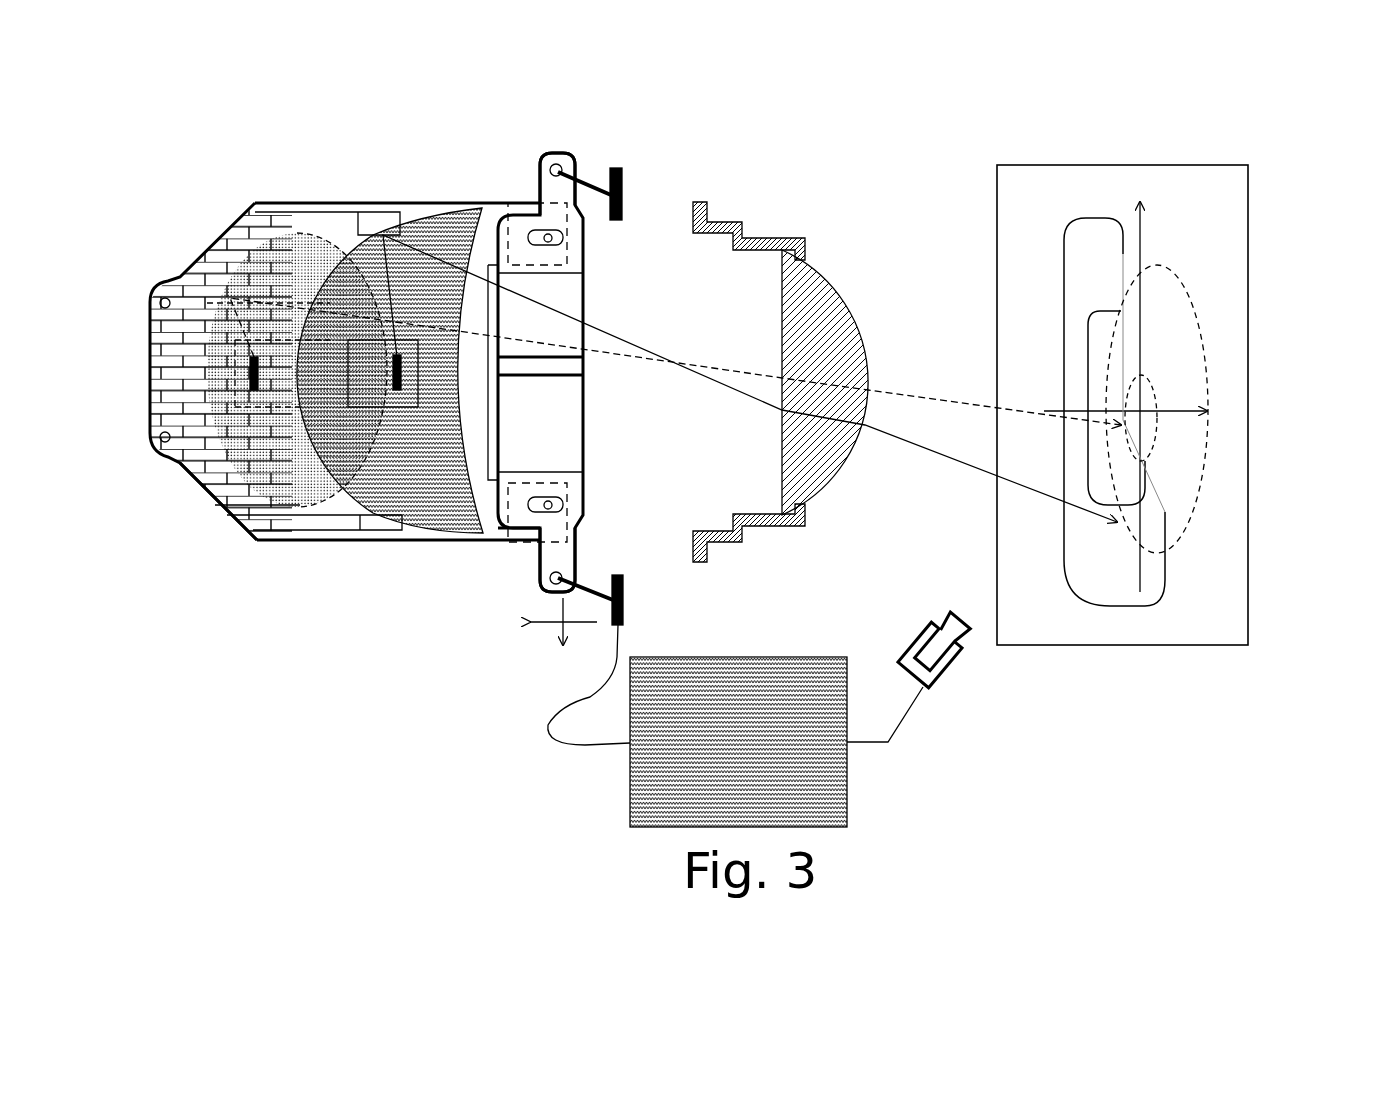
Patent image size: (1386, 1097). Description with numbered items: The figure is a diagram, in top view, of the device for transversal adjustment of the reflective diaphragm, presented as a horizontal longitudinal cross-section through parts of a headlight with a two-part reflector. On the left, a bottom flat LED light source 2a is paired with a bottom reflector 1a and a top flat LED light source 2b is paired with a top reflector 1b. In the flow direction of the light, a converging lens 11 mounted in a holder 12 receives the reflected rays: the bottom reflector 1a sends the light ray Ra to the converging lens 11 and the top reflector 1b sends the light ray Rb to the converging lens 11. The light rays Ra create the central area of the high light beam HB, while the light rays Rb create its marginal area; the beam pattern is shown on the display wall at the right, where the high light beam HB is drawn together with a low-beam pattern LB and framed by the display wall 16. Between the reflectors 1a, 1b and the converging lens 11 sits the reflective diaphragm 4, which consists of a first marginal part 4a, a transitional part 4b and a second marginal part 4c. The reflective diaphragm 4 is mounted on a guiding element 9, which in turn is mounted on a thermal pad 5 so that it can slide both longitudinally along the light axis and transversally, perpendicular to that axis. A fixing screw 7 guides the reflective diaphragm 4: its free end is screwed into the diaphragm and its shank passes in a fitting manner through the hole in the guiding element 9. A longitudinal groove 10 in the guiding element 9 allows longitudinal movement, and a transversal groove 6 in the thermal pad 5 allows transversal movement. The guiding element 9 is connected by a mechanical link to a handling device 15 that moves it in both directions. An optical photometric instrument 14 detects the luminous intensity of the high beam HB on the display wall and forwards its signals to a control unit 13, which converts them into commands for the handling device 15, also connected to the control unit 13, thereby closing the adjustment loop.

The bottom reflector 1a is at (295, 455).
The top reflector 1b is at (407, 410).
The bottom flat LED light source 2a is at (217, 497).
The top flat LED light source 2b is at (390, 372).
The reflective diaphragm 4 is at (577, 398).
The first marginal part 4a is at (565, 410).
The transitional part 4b is at (570, 365).
The second marginal part 4c is at (555, 294).
The thermal pad 5 is at (413, 212).
The transversal groove 6 is at (540, 212).
The fixing screw 7 is at (533, 240).
The guiding element 9 is at (522, 505).
The longitudinal groove 10 is at (533, 283).
The converging lens 11 is at (820, 307).
The holder 12 is at (728, 225).
The control unit 13 is at (810, 770).
The optical photometric instrument 14 is at (950, 683).
The handling device 15 is at (620, 603).
The light distribution screen 16 is at (1187, 374).
The light ray Ra is at (278, 272).
The light ray Rb is at (448, 210).
The high light beam HB is at (1183, 337).
The low beam distribution LB is at (1125, 593).